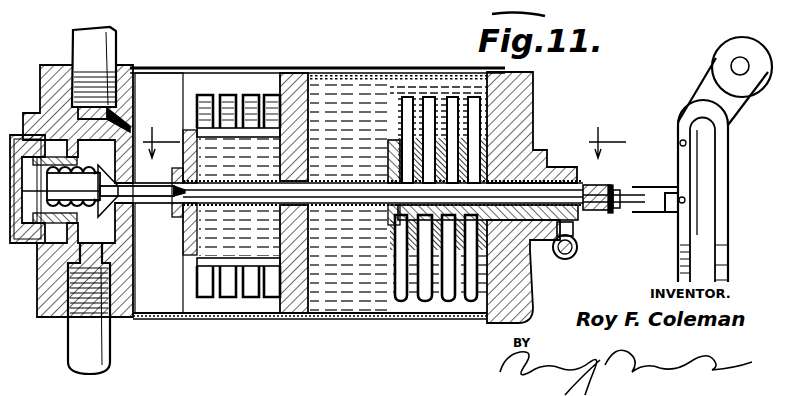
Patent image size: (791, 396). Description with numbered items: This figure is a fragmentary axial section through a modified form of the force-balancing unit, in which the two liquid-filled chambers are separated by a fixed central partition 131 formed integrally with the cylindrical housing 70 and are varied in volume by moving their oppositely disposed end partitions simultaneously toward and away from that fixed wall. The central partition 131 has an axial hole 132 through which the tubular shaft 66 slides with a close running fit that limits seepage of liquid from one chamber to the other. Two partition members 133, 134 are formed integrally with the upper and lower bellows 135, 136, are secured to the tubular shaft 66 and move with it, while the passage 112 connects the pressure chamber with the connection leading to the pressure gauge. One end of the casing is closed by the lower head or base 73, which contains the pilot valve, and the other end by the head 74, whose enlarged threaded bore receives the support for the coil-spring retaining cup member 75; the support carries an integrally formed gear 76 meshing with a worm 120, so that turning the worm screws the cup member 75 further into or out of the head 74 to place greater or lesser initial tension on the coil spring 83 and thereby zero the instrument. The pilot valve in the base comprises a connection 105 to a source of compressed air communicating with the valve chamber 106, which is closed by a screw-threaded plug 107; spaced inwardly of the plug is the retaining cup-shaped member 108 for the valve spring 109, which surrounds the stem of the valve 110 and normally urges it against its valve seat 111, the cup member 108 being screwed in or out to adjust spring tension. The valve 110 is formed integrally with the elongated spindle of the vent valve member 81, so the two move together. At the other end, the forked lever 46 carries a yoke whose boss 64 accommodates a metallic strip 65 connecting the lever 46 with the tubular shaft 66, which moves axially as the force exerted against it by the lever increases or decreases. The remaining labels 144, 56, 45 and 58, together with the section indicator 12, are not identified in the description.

The plug 144 is at (70, 40).
The lever 56 is at (85, 3).
The retaining cup-shaped member 108 is at (13, 134).
The passage 112 is at (135, 110).
The partition member 133 is at (185, 138).
The valve seat 111 is at (143, 138).
The upper bellows 135 is at (225, 95).
The central partition 131 is at (296, 75).
The cylindrical housing 70 is at (361, 70).
The lower bellows 136 is at (415, 80).
The head 74 is at (530, 90).
The coil-spring 83 is at (400, 165).
The lever arm 45 is at (714, 63).
The forked lever 46 is at (678, 162).
The boss 64 is at (648, 188).
The shaft 58 is at (698, 176).
The valve member 81 is at (163, 197).
The valve 110 is at (133, 226).
The valve chamber 106 is at (133, 252).
The valve spring 109 is at (69, 198).
The screw-threaded plug 107 is at (16, 243).
The lower head or base 73 is at (52, 313).
The connection 105 is at (110, 353).
The axial hole 132 is at (310, 197).
The partition member 134 is at (357, 205).
The coil-spring retaining cup member 75 is at (490, 238).
The worm gear 120 is at (578, 236).
The gear 76 is at (577, 246).
The tubular shaft 66 is at (583, 212).
The metallic strip 65 is at (630, 213).
The section line 12 is at (384, 145).